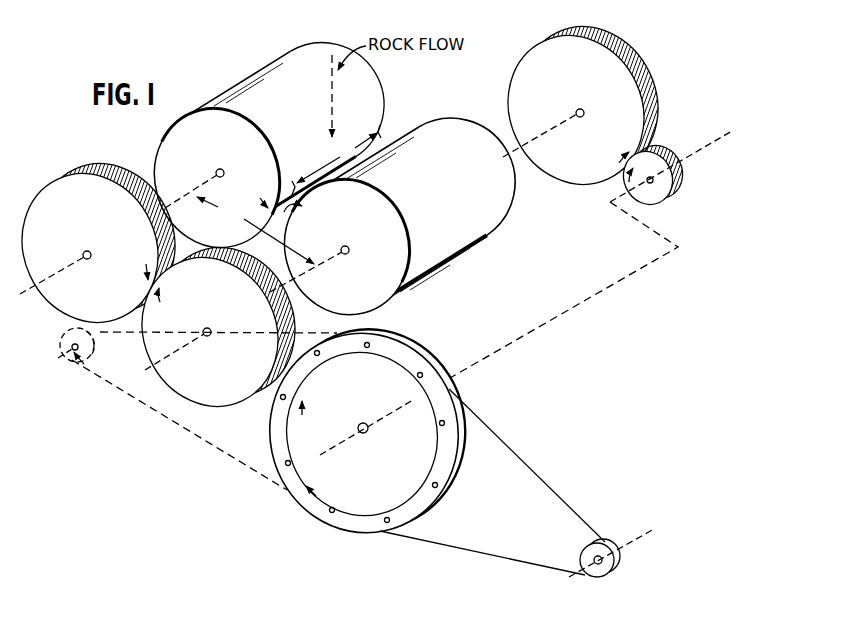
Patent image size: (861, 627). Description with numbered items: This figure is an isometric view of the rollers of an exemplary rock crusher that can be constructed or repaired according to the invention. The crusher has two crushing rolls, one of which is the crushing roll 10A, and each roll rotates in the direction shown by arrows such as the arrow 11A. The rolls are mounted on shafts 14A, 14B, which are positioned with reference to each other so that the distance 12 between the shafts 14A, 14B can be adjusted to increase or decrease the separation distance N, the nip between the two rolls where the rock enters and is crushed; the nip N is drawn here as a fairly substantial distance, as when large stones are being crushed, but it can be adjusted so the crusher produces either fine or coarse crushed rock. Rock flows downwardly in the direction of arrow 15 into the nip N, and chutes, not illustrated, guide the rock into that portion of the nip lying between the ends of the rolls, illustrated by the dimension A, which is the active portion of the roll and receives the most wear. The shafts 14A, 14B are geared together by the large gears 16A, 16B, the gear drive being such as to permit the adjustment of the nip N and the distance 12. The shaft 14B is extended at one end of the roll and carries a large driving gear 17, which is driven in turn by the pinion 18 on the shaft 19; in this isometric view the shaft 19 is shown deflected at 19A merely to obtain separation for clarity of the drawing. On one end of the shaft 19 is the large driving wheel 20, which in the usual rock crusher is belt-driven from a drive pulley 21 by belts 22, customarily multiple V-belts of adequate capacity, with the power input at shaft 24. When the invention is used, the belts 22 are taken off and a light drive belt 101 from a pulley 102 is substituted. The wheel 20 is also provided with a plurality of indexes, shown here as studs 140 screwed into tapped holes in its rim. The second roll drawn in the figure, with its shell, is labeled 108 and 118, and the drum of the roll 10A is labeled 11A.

The crushing roll 10A is at (261, 148).
The arrow indicating rotation direction 11A is at (267, 182).
The distance between shafts 12 is at (255, 230).
The shaft 14A is at (193, 195).
The shaft 14B is at (339, 258).
The arrow indicating rock flow 15 is at (334, 114).
The large gear 16A is at (80, 228).
The large gear 16B is at (236, 301).
The large driving gear 17 is at (656, 84).
The pinion 18 is at (662, 154).
The shaft 19 is at (696, 149).
The deflection of shaft 19A is at (531, 333).
The large driving wheel 20 is at (412, 357).
The drive pulley 21 is at (75, 356).
The belts 22 is at (150, 408).
The shaft 24 is at (58, 364).
The light drive belt 101 is at (560, 493).
The pulley 102 is at (608, 544).
The second roller drum assembly 108 is at (393, 208).
The second roller shell 118 is at (300, 238).
The studs 140 is at (560, 127).
The dimension of active roll portion A is at (336, 160).
The nip N is at (293, 198).